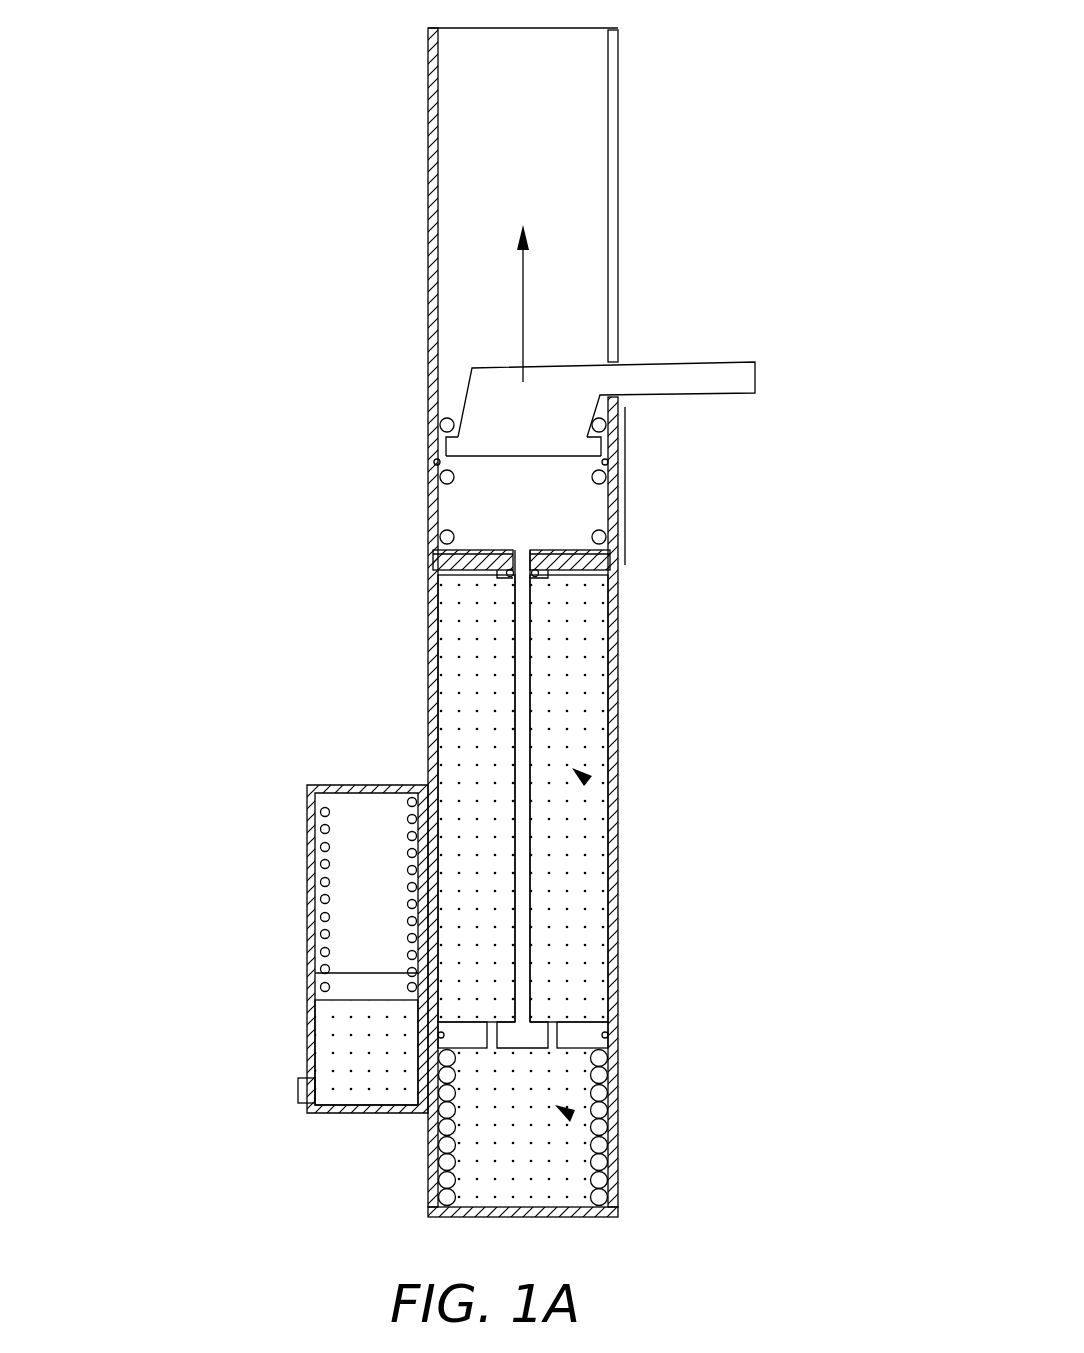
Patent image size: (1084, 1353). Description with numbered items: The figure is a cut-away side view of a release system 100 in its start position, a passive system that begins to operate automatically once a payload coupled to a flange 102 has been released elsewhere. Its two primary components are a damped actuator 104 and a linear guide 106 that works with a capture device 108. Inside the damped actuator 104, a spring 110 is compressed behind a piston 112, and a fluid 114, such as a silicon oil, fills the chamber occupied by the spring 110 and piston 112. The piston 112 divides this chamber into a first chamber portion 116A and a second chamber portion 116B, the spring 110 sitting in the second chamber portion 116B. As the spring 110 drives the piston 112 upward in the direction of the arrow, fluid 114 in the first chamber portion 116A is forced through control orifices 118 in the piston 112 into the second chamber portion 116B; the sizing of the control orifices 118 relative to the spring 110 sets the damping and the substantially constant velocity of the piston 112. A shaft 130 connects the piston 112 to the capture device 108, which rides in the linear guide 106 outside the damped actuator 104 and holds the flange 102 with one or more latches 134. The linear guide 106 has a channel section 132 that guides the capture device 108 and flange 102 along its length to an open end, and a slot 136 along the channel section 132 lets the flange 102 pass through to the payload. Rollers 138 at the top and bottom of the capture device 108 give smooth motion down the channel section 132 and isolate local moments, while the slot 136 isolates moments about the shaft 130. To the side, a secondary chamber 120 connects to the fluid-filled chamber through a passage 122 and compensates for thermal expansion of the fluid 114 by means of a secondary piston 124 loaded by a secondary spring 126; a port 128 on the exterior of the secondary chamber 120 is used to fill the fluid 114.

The release system 100 is at (690, 40).
The flange 102 is at (705, 365).
The damped actuator 104 is at (617, 745).
The linear guide 106 is at (428, 112).
The capture device 108 is at (440, 462).
The spring 110 is at (432, 1165).
The piston 112 is at (603, 1014).
The fluid 114 is at (582, 830).
The first chamber portion 116A is at (582, 780).
The second chamber portion 116B is at (570, 1117).
The control orifices 118 is at (493, 1035).
The secondary chamber 120 is at (315, 1000).
The passage 122 is at (422, 1108).
The secondary piston 124 is at (343, 985).
The secondary spring 126 is at (325, 897).
The port 128 is at (300, 1095).
The shaft 130 is at (520, 735).
The channel section 132 is at (487, 262).
The latches 134 is at (594, 422).
The slot 136 is at (613, 328).
The rollers 138 is at (452, 480).